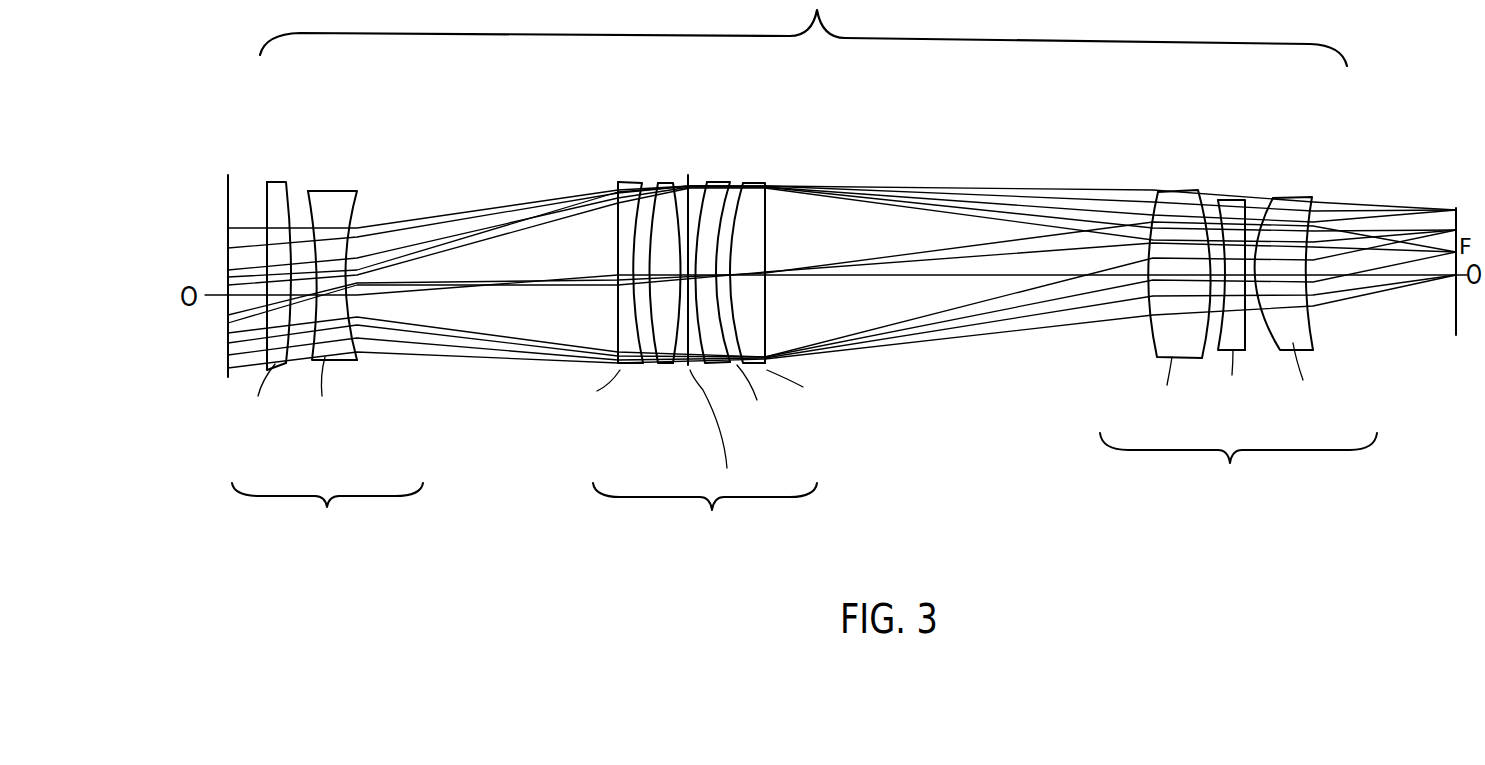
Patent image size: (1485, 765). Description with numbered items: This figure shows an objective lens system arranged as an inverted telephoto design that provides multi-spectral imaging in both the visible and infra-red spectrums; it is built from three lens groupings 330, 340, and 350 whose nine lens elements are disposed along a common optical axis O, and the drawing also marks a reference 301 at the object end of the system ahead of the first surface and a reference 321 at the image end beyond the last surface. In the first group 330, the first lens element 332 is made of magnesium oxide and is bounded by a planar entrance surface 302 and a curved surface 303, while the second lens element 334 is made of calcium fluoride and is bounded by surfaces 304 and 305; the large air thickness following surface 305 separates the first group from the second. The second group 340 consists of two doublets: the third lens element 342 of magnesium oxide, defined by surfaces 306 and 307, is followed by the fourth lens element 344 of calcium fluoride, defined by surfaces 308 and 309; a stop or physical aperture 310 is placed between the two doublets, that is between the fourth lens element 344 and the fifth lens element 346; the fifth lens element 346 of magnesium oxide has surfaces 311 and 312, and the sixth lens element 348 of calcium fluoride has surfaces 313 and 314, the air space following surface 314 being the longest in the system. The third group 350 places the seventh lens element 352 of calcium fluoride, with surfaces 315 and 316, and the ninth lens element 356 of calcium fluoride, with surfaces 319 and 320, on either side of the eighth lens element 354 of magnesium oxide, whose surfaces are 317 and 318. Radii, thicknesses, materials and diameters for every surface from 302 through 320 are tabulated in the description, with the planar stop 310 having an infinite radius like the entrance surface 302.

The object plane 301 is at (228, 188).
The lens surface 302 is at (267, 190).
The lens surface 303 is at (288, 182).
The lens surface 304 is at (307, 193).
The lens surface 305 is at (358, 197).
The lens surface 306 is at (617, 183).
The lens surface 307 is at (655, 187).
The lens surface 308 is at (658, 183).
The lens surface 309 is at (673, 183).
The stop or physical aperture 310 is at (687, 366).
The lens surface 311 is at (707, 178).
The lens surface 312 is at (728, 183).
The lens surface 313 is at (743, 183).
The lens surface 314 is at (765, 208).
The lens surface 315 is at (1158, 192).
The lens surface 316 is at (1198, 197).
The lens surface 317 is at (1227, 200).
The lens surface 318 is at (1237, 200).
The lens surface 319 is at (1273, 200).
The lens surface 320 is at (1308, 200).
The image plane 321 is at (1447, 249).
The first lens group 330 is at (325, 330).
The first lens element 332 is at (280, 365).
The second lens element 334 is at (350, 359).
The second lens group 340 is at (728, 309).
The third lens element 342 is at (627, 370).
The fourth lens element 344 is at (647, 370).
The fifth lens element 346 is at (730, 370).
The sixth lens element 348 is at (760, 330).
The third lens group 350 is at (1231, 312).
The seventh lens element 352 is at (1167, 343).
The eighth lens element 354 is at (1250, 350).
The ninth lens element 356 is at (1310, 342).